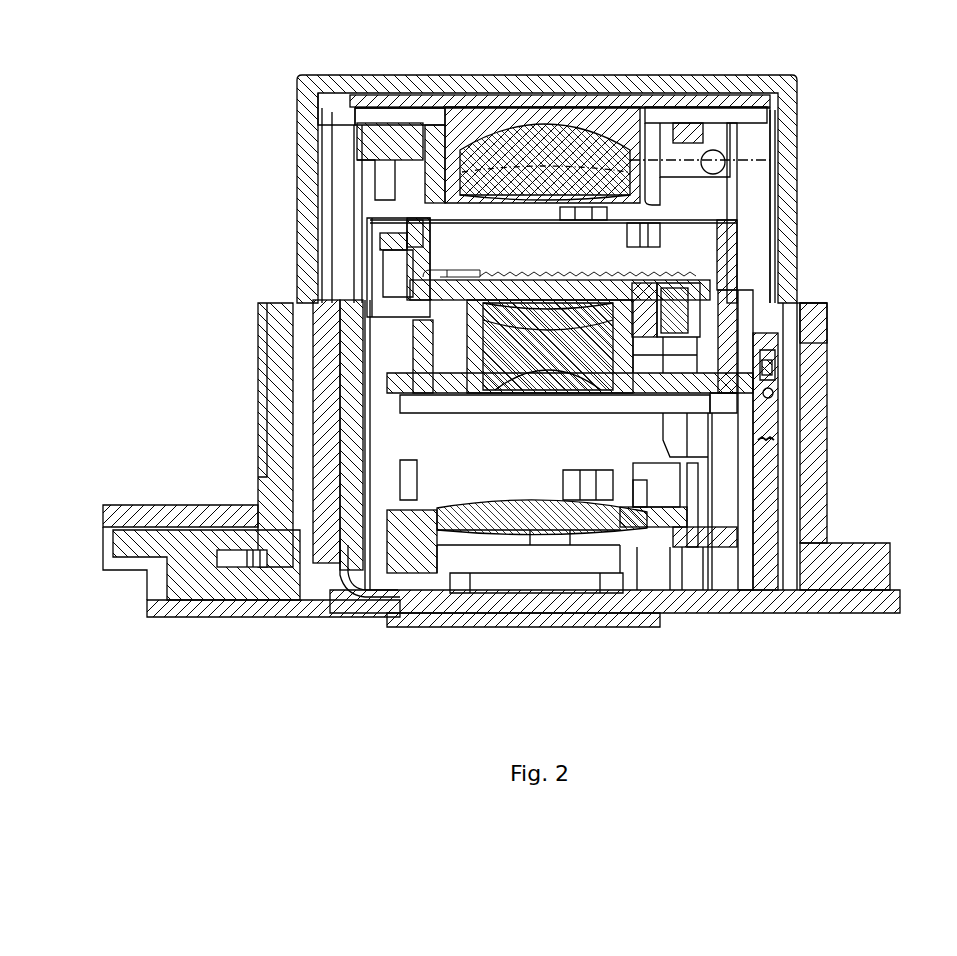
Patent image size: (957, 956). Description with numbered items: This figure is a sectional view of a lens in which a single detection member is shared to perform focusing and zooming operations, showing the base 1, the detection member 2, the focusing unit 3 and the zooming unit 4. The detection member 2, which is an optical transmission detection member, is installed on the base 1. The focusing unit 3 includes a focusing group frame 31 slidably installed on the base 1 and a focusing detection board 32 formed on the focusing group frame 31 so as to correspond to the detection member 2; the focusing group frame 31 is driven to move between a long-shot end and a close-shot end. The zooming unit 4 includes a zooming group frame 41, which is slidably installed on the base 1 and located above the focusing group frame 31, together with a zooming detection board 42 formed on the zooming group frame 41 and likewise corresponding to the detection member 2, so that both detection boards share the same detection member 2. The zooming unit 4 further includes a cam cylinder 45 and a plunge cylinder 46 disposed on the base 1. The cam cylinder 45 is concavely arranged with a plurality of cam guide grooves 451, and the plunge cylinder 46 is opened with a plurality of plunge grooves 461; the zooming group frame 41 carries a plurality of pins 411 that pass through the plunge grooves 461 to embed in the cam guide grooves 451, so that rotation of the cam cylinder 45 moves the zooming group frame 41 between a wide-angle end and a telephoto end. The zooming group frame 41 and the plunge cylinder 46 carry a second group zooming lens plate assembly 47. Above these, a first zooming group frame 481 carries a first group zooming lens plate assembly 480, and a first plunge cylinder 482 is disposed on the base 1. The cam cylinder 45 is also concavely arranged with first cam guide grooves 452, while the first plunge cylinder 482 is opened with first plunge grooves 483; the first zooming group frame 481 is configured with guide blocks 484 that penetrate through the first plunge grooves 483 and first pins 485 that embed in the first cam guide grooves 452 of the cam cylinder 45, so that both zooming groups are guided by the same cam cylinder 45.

The base 1 is at (705, 605).
The detection member 2 is at (387, 550).
The focusing unit 3 is at (513, 594).
The focusing group frame 31 is at (443, 527).
The focusing detection board 32 is at (405, 556).
The zooming unit 4 is at (690, 262).
The zooming group frame 41 is at (700, 423).
The zooming detection board 42 is at (387, 390).
The pins 411 is at (760, 402).
The cam cylinder 45 is at (772, 447).
The cam guide grooves 451 is at (770, 360).
The first cam guide grooves 452 is at (767, 440).
The plunge cylinder 46 is at (752, 558).
The plunge grooves 461 is at (747, 488).
The second group zooming lens plate assembly 47 is at (693, 292).
The first group zooming lens plate assembly 480 is at (700, 160).
The first zooming group frame 481 is at (693, 113).
The first plunge cylinder 482 is at (818, 330).
The first plunge grooves 483 is at (803, 308).
The guide blocks 484 is at (783, 388).
The first pins 485 is at (775, 370).